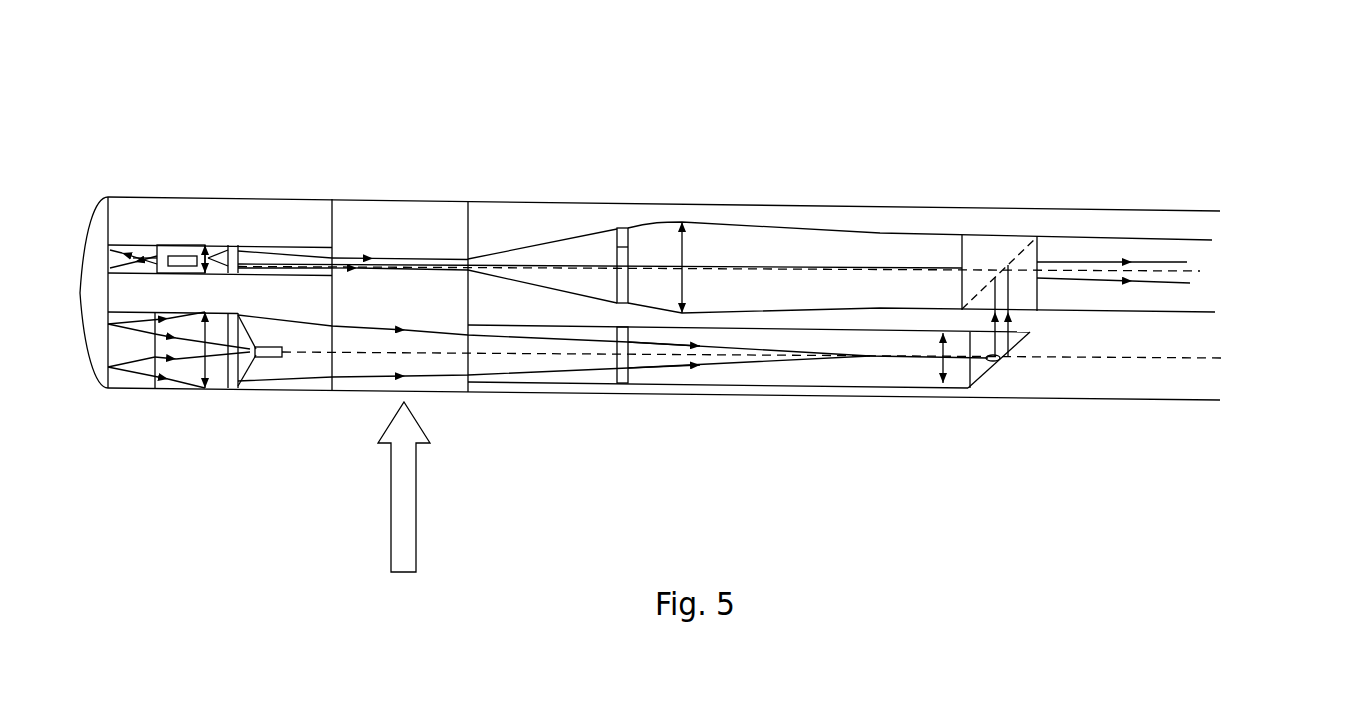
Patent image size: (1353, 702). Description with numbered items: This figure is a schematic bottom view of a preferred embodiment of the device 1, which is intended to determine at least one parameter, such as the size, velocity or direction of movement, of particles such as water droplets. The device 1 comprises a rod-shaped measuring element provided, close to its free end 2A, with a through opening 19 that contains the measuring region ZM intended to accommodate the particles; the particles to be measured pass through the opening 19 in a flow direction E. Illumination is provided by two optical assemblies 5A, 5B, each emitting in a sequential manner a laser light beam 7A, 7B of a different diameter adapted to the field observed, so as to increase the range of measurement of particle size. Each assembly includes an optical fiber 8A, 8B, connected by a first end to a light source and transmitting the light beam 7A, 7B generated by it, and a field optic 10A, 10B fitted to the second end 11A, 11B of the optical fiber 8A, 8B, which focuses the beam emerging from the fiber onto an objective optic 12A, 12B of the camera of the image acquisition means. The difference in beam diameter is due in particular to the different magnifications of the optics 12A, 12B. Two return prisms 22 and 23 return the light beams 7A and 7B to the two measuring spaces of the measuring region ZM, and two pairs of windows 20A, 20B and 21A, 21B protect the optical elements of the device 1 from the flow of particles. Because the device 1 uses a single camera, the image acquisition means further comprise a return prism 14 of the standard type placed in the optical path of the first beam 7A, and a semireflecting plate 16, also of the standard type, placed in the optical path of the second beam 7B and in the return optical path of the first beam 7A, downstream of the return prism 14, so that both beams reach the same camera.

The device 1 is at (948, 152).
The free end 2A is at (513, 150).
The optical assembly 5A is at (1203, 375).
The optical assembly 5B is at (1210, 282).
The light beam 7A is at (362, 378).
The light beam 7B is at (420, 253).
The optical fiber 8A is at (1044, 360).
The optical fiber 8B is at (1205, 271).
The field optic 10A is at (185, 380).
The field optic 10B is at (229, 247).
The second end 11A is at (274, 360).
The second end 11B is at (185, 250).
The objective optic 12A is at (942, 372).
The objective optic 12B is at (688, 253).
The return prism 14 is at (980, 372).
The semireflecting plate 16 is at (1016, 250).
The through opening 19 is at (367, 218).
The window 20A is at (239, 375).
The window 20B is at (252, 248).
The window 21A is at (632, 378).
The window 21B is at (622, 247).
The return prism 22 is at (128, 380).
The return prism 23 is at (121, 250).
The flow direction E is at (416, 495).
The measuring region ZM is at (430, 384).